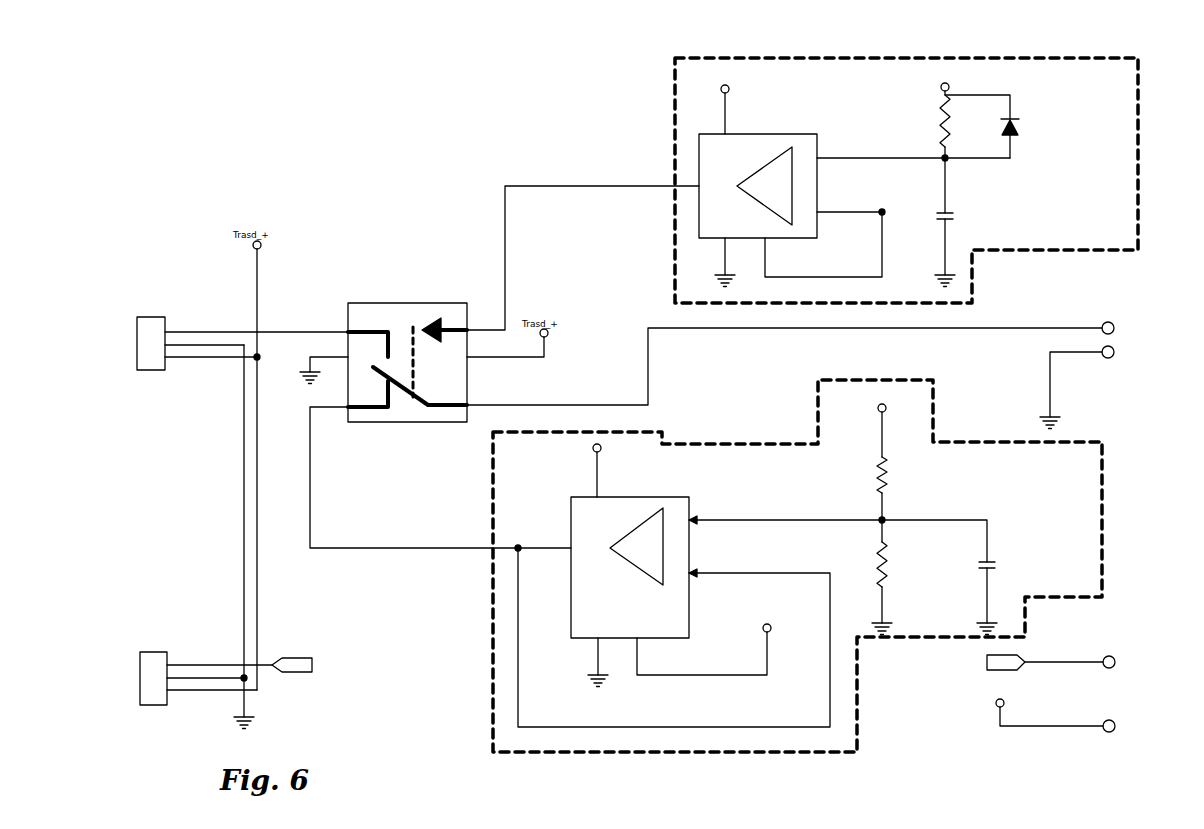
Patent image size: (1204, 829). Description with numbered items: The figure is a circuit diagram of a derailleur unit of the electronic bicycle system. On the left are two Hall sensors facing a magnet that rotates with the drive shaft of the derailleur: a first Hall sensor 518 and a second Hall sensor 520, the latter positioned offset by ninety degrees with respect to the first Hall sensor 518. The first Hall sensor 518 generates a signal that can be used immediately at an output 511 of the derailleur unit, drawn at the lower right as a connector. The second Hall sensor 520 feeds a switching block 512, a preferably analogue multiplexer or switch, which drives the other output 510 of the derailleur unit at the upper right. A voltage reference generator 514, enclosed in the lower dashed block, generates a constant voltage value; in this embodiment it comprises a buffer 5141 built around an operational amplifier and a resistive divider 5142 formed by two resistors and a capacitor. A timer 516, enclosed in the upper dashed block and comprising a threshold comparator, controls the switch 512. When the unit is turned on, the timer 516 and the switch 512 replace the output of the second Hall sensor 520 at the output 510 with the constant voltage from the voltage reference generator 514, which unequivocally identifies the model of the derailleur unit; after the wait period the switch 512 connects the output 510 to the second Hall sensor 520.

The output 510 is at (1111, 322).
The output 511 is at (1110, 656).
The switching block 512 is at (408, 303).
The voltage reference generator 514 is at (792, 566).
The timer 516 is at (672, 103).
The first Hall sensor 518 is at (165, 652).
The second Hall sensor 520 is at (165, 317).
The buffer 5141 is at (555, 638).
The resistive divider 5142 is at (912, 513).